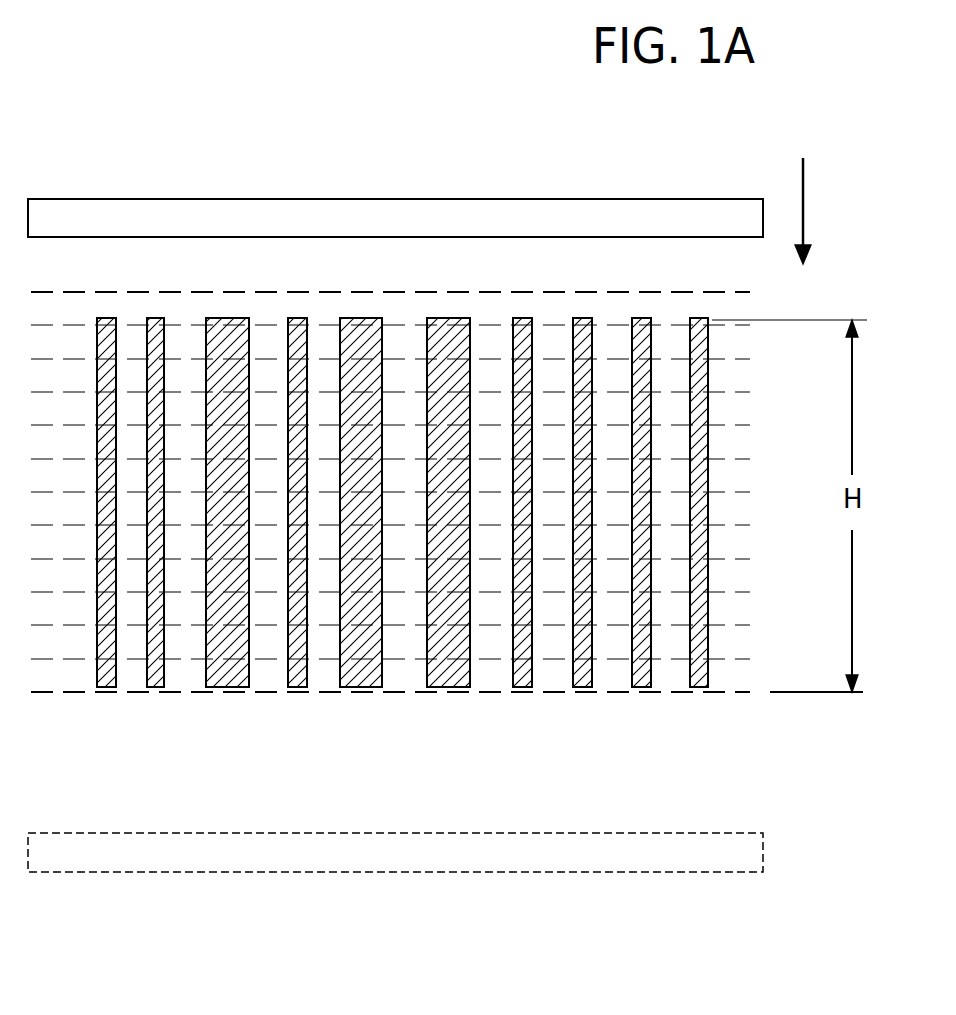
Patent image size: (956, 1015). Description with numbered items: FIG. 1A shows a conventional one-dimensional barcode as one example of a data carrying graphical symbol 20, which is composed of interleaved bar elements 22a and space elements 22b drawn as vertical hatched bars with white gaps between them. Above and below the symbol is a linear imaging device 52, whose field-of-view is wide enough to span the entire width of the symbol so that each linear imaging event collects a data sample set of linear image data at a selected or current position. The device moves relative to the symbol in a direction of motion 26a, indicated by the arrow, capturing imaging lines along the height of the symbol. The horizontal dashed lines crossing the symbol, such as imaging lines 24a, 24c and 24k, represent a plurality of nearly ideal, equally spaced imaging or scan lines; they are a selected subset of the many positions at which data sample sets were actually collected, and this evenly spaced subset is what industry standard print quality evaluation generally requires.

The linear imaging device 52 is at (365, 200).
The direction of motion 26a is at (805, 228).
The data carrying graphical symbol 20 is at (422, 558).
The bar elements 22a is at (108, 683).
The space elements 22b is at (323, 678).
The imaging line 24a is at (743, 327).
The imaging line 24c is at (737, 392).
The imaging line 24k is at (738, 659).